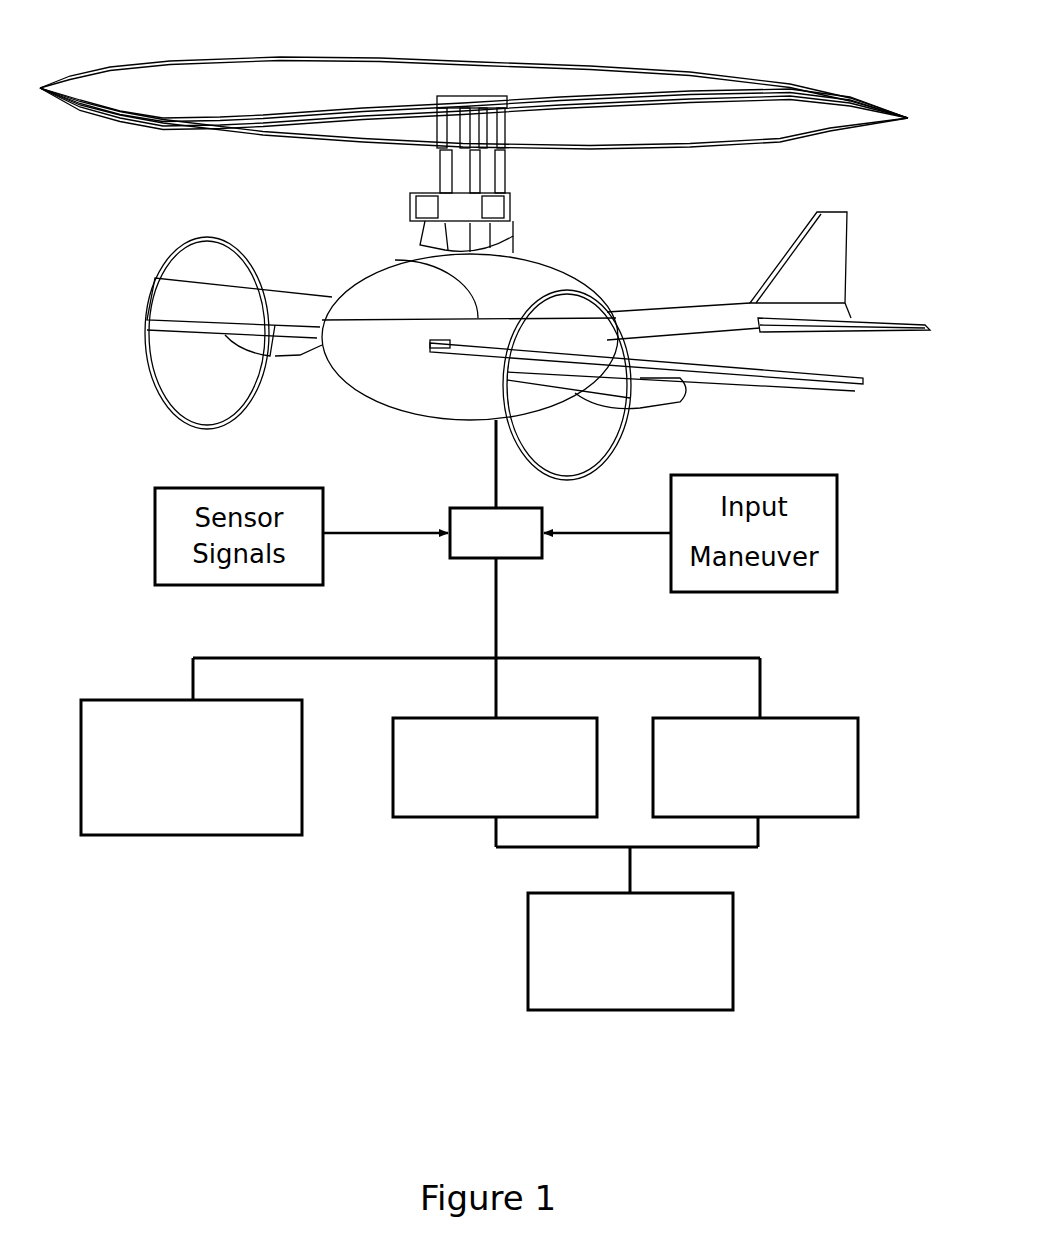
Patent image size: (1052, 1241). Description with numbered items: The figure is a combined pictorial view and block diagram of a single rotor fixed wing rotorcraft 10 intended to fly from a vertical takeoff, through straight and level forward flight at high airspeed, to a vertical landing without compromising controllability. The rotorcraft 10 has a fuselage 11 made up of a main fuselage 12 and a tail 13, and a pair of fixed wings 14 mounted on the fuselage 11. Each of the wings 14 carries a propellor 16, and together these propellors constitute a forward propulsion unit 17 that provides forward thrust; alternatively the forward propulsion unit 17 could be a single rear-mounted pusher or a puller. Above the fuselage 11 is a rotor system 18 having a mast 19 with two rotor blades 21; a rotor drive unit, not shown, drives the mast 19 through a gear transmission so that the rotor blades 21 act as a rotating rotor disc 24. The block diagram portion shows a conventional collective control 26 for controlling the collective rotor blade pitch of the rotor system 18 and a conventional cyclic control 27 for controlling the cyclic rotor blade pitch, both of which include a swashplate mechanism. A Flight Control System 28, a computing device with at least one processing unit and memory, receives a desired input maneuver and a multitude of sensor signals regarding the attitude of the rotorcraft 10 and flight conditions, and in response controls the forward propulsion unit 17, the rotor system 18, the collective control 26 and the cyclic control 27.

The single rotor fixed wing rotorcraft 10 is at (829, 62).
The fuselage 11 is at (627, 278).
The main fuselage 12 is at (372, 406).
The tail 13 is at (835, 252).
The fixed wings 14 is at (284, 290).
The propellor 16 is at (162, 397).
The forward propulsion unit 17 is at (185, 840).
The rotor system 18 is at (740, 957).
The mast 19 is at (410, 200).
The rotor blades 21 is at (622, 86).
The rotor disc 24 is at (810, 150).
The collective control 26 is at (392, 822).
The cyclic control 27 is at (862, 765).
The Flight Control System (FCS) 28 is at (532, 566).